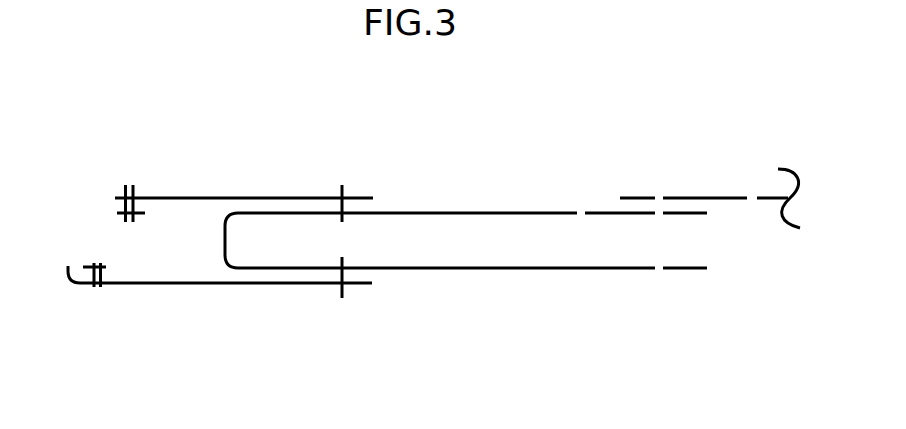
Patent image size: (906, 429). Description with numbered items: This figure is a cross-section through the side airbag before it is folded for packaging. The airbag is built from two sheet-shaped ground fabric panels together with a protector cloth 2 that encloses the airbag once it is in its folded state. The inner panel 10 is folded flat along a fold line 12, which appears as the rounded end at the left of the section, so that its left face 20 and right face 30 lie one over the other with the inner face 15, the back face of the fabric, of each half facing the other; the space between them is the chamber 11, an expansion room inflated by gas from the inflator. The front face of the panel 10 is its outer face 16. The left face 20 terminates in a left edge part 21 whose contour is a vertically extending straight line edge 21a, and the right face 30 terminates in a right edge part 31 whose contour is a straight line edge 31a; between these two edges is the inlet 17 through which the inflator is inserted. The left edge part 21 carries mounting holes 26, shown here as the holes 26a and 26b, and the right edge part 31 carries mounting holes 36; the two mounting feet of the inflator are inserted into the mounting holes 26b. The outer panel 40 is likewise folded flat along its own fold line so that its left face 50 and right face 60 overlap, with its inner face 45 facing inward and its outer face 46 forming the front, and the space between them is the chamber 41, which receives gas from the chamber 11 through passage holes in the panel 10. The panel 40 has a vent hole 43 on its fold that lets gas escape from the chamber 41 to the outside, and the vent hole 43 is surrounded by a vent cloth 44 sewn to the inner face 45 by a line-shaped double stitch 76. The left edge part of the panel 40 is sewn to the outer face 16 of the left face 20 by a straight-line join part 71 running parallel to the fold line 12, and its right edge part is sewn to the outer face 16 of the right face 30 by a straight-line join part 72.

The protector cloth 2 is at (715, 189).
The panel 10 is at (504, 229).
The chamber 11 is at (273, 253).
The fold line 12 is at (222, 245).
The inner face 15 is at (473, 215).
The outer face 16 is at (420, 212).
The inlet 17 is at (714, 244).
The left face 20 is at (296, 204).
The left edge part 21 is at (685, 212).
The straight line edge 21a is at (707, 213).
The mounting holes 26 is at (567, 146).
The first joint portion 26a is at (659, 212).
The mounting holes 26b is at (581, 212).
The right face 30 is at (486, 276).
The right edge part 31 is at (685, 268).
The straight line edge 31a is at (707, 268).
The mounting holes 36 is at (659, 268).
The panel 40 is at (226, 242).
The chamber 41 is at (121, 284).
The vent hole 43 is at (80, 272).
The vent cloth 44 is at (88, 255).
The inner face 45 is at (205, 200).
The outer face 46 is at (174, 197).
The left face 50 is at (232, 190).
The right face 60 is at (192, 291).
The straight-line join part 71 is at (342, 185).
The straight-line join part 72 is at (342, 298).
The line-shaped double stitch 76 is at (126, 185).